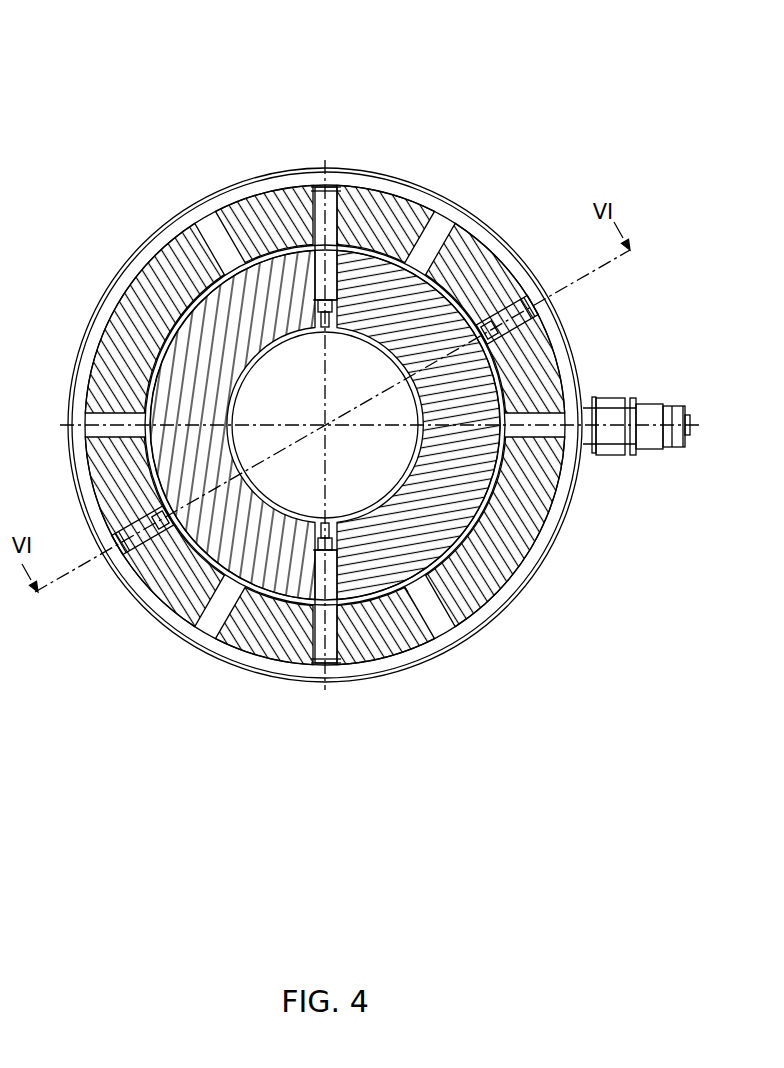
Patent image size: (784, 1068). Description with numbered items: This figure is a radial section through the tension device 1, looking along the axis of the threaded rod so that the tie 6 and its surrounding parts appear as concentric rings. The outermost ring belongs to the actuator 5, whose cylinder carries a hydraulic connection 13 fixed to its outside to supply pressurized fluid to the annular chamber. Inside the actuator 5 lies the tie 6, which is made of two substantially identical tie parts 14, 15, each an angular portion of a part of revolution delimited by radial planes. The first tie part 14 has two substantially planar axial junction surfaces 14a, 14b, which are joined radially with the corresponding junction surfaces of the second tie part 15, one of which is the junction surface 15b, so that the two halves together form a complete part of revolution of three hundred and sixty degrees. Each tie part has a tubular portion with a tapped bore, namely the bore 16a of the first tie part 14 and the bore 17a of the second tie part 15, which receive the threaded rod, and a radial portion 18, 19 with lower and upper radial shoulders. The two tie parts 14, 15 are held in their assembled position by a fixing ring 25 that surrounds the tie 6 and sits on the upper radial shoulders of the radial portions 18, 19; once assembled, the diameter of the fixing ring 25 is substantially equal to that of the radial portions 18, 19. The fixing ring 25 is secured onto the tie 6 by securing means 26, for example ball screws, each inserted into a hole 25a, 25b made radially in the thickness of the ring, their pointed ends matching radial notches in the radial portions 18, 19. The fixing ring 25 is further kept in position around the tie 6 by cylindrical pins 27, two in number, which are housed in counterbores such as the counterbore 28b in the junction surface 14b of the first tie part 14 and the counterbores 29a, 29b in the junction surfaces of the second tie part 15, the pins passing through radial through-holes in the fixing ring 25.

The tension device 1 is at (478, 52).
The actuator 5 is at (580, 356).
The tie 6 is at (487, 577).
The hydraulic connection 13 is at (657, 410).
The first tie part 14 is at (128, 446).
The axial junction surface 14a is at (225, 655).
The axial junction surface 14b is at (213, 205).
The second tie part 15 is at (383, 488).
The axial junction surface 15b is at (408, 203).
The bore 16a is at (175, 366).
The bore 17a is at (500, 535).
The radial portion 18 is at (205, 340).
The radial portion 19 is at (435, 305).
The fixing ring 25 is at (408, 647).
The hole 25a is at (115, 540).
The hole 25b is at (527, 295).
The securing means 26 is at (505, 315).
The cylindrical pins 27 is at (326, 185).
The counterbore 28b is at (315, 187).
The counterbore 29a is at (316, 668).
The counterbore 29b is at (345, 180).